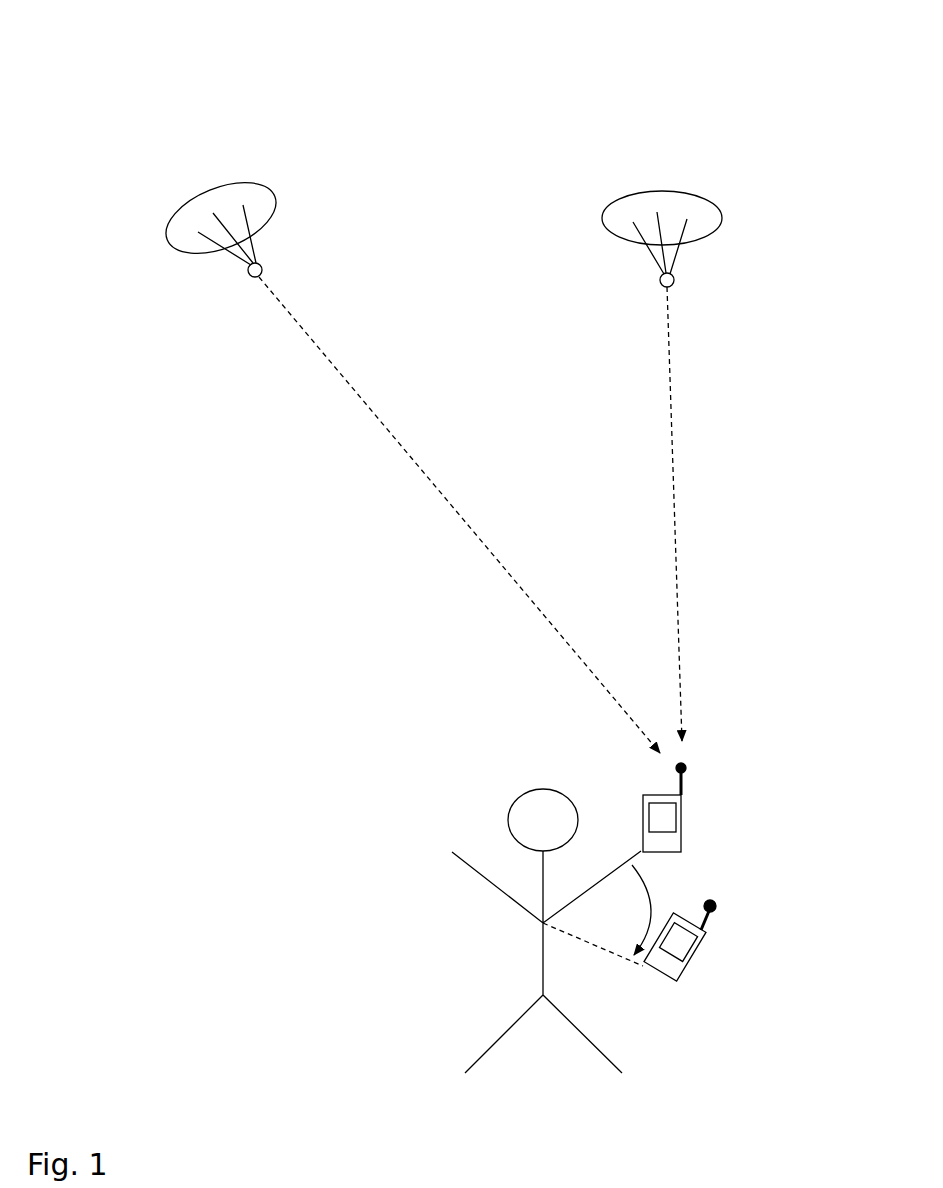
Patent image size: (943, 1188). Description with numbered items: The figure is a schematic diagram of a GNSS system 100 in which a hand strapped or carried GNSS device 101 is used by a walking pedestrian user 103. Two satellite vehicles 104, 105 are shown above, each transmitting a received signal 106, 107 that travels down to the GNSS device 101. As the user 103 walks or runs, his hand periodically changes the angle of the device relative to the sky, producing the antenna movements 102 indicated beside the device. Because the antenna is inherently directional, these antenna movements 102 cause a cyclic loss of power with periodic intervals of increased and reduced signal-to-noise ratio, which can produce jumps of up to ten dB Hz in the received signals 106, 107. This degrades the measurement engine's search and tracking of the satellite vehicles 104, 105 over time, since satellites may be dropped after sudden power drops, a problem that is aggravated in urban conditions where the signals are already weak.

The GNSS system 100 is at (83, 94).
The GNSS device 101 is at (694, 799).
The antenna movements 102 is at (656, 882).
The walking user 103 is at (455, 802).
The satellite vehicle 104 is at (322, 203).
The satellite vehicle 105 is at (752, 225).
The received signal 106 is at (440, 465).
The received signal 107 is at (686, 488).